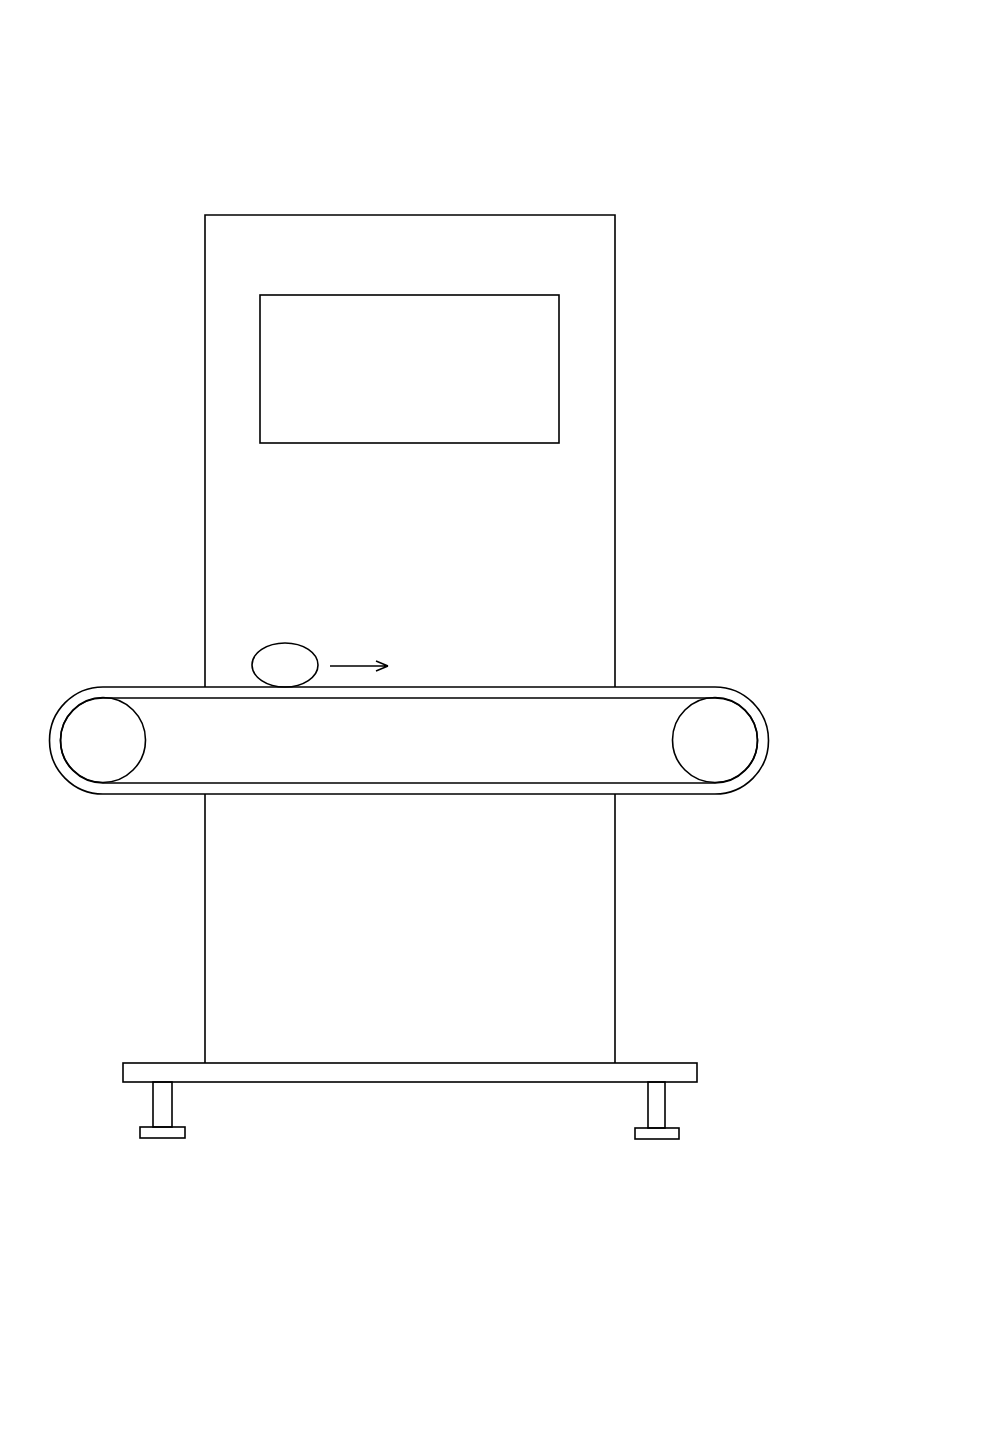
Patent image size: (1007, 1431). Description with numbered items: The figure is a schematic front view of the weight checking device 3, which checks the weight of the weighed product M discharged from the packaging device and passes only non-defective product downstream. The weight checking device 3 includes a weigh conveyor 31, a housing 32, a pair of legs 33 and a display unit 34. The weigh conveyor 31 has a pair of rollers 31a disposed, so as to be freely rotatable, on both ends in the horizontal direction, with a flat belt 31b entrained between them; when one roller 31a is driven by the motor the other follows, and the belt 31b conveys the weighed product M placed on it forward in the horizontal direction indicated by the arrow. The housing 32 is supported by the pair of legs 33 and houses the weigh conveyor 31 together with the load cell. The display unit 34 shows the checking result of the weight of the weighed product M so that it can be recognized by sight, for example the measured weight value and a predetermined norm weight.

The weight checking device 3 is at (635, 128).
The weigh conveyor 31 is at (452, 739).
The rollers 31a is at (110, 755).
The belt 31b is at (670, 687).
The housing 32 is at (615, 928).
The legs 33 is at (162, 1107).
The display unit 34 is at (533, 374).
The weighed product M is at (295, 643).